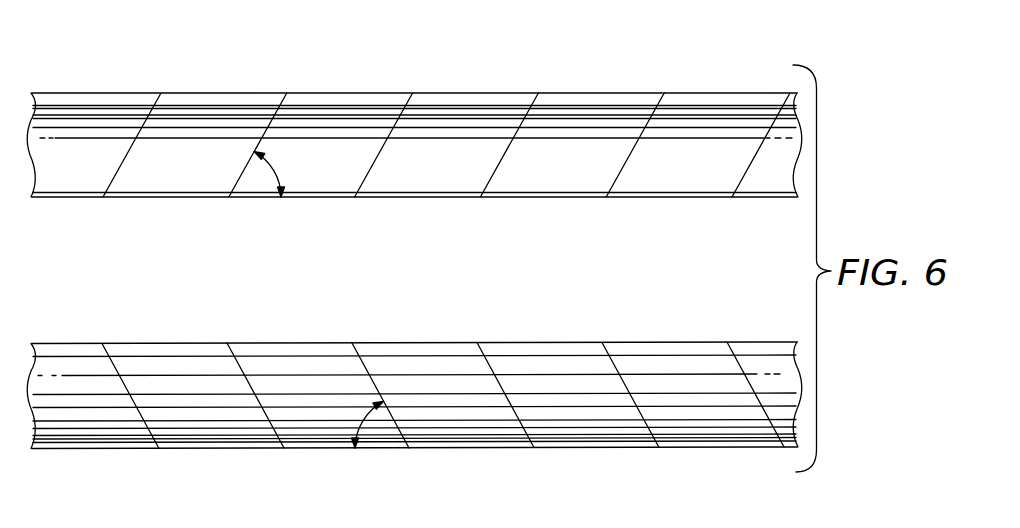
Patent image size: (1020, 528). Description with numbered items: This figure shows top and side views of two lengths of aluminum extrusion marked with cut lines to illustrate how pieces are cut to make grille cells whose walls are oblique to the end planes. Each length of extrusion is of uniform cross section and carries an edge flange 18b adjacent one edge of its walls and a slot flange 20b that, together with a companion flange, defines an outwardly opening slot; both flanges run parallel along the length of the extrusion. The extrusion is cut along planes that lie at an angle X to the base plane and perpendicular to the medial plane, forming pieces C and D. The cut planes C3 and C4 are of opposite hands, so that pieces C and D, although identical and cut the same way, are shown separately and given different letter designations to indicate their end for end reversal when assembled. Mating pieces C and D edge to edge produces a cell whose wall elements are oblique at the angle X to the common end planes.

The slot flange 20b is at (718, 94).
The edge flange 18b is at (651, 197).
The piece C is at (431, 81).
The piece D is at (427, 331).
The cut plane C3 is at (129, 152).
The cut plane C4 is at (240, 368).
The angle X is at (273, 167).